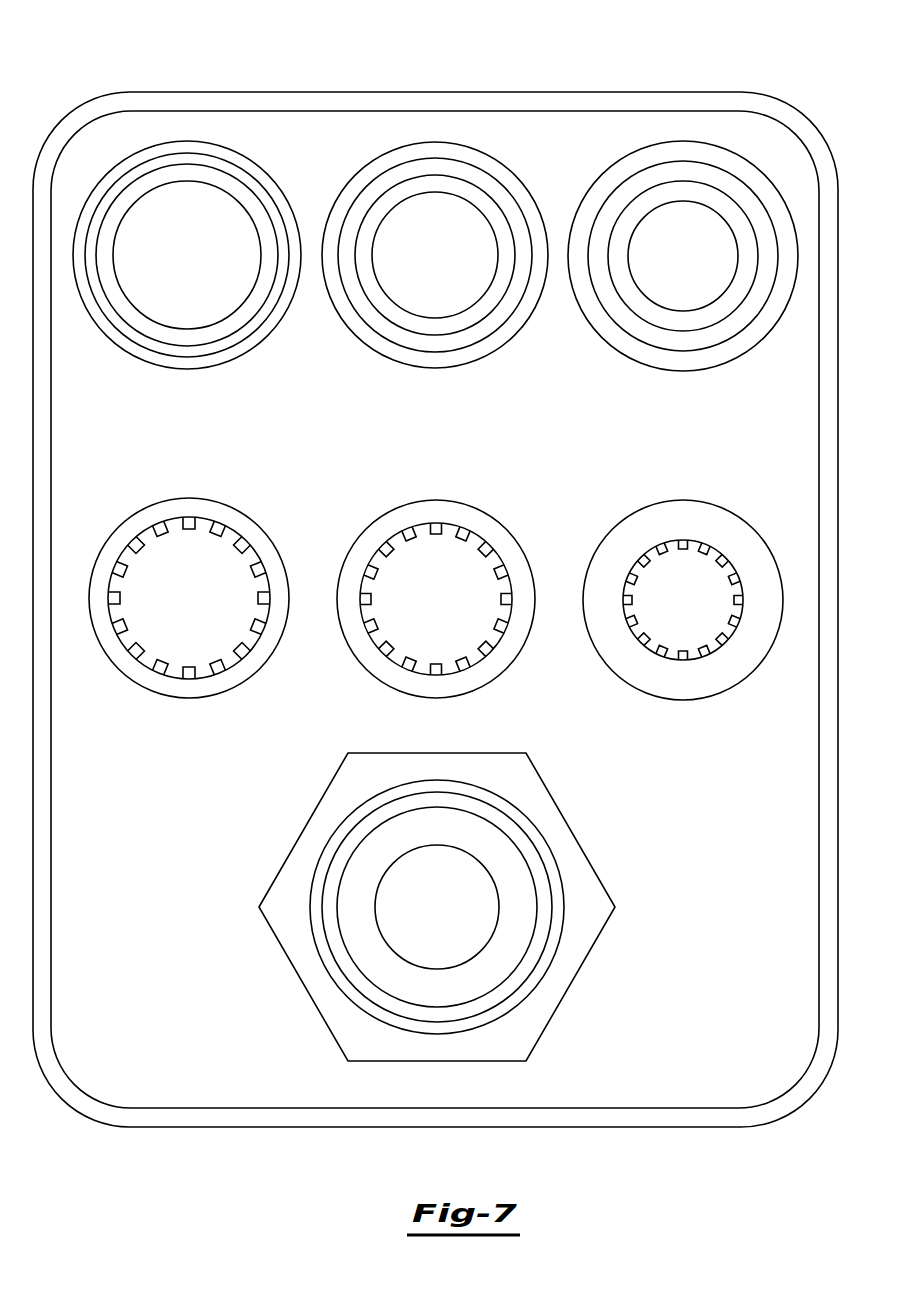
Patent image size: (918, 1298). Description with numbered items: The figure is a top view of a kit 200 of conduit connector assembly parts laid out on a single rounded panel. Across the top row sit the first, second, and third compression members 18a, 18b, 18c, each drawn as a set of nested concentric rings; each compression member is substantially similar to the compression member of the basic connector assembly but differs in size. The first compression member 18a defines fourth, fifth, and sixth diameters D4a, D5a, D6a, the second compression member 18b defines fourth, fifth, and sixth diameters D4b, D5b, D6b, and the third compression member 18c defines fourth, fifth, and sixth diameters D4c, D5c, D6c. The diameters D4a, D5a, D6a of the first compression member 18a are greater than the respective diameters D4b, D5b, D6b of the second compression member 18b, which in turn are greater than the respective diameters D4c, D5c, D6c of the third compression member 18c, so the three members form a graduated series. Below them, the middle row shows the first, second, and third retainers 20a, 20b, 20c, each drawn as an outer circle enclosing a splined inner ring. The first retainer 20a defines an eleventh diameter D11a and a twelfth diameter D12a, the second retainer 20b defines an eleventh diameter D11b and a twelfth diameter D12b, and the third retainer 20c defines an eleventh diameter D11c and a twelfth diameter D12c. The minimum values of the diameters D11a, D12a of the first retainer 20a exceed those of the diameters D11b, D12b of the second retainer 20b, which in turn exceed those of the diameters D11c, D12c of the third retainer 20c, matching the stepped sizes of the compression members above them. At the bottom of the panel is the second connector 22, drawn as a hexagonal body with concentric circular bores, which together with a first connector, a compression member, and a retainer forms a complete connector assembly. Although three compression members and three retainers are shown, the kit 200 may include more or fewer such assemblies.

The kit 200 is at (672, 62).
The first compression member 18a is at (187, 291).
The second compression member 18b is at (438, 291).
The third compression member 18c is at (683, 291).
The first retainer 20a is at (199, 568).
The second retainer 20b is at (449, 568).
The third retainer 20c is at (692, 574).
The second connector 22 is at (600, 851).
The fourth diameter of the first compression member D4a is at (265, 318).
The fourth diameter of the second compression member D4b is at (520, 300).
The fourth diameter of the third compression member D4c is at (758, 310).
The fifth diameter of the first compression member D5a is at (160, 170).
The fifth diameter of the second compression member D5b is at (392, 187).
The fifth diameter of the third compression member D5c is at (637, 198).
The sixth diameter of the first compression member D6a is at (237, 307).
The sixth diameter of the second compression member D6b is at (482, 297).
The sixth diameter of the third compression member D6c is at (713, 298).
The eleventh diameter of the first retainer D11a is at (158, 527).
The eleventh diameter of the second retainer D11b is at (408, 532).
The eleventh diameter of the third retainer D11c is at (662, 548).
The twelfth diameter of the first retainer D12a is at (135, 650).
The twelfth diameter of the second retainer D12b is at (388, 647).
The twelfth diameter of the third retainer D12c is at (645, 635).